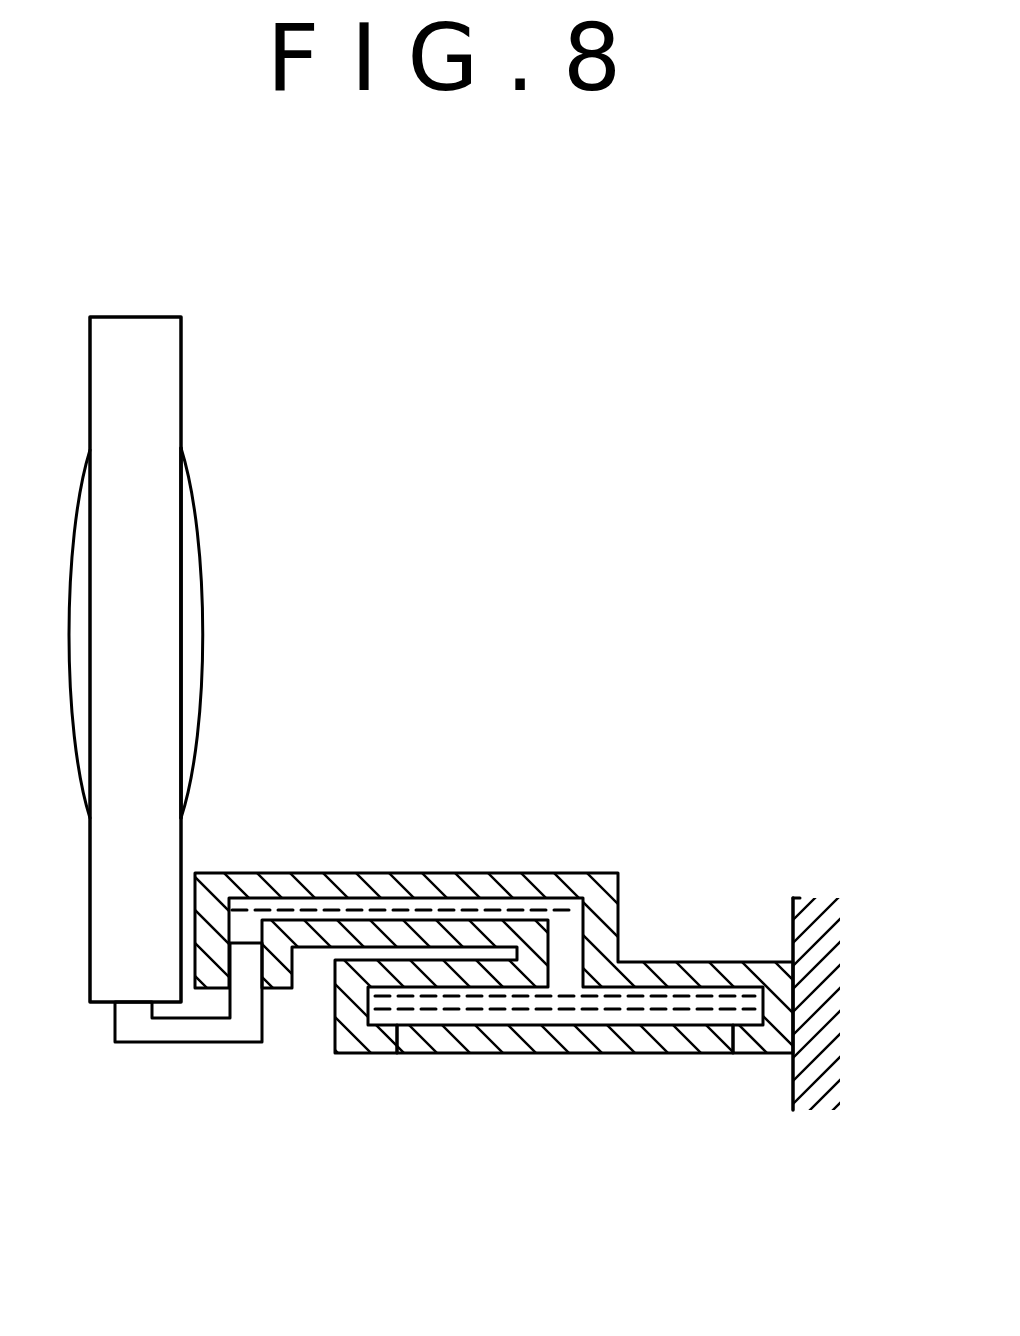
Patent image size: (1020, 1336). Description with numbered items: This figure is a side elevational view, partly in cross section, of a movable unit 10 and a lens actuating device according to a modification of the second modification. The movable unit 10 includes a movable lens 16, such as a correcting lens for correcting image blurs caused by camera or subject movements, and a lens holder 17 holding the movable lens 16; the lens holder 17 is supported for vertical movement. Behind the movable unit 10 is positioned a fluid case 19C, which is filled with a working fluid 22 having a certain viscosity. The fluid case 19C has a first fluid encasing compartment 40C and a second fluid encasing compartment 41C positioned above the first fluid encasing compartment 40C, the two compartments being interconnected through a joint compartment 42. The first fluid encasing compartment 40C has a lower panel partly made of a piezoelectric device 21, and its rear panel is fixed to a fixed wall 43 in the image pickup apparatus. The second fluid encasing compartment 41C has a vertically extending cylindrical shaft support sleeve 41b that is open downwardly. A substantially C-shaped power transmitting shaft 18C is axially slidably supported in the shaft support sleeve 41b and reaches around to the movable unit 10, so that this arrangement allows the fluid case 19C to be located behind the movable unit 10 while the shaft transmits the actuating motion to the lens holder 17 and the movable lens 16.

The movable unit 10 is at (177, 342).
The lens holder 17 is at (175, 447).
The movable lens 16 is at (202, 573).
The fluid case 19C is at (510, 887).
The second fluid encasing compartment 41C is at (368, 872).
The joint compartment 42 is at (607, 927).
The first fluid encasing compartment 40C is at (723, 962).
The shaft support sleeve 41b is at (295, 988).
The piezoelectric device 21 is at (593, 1047).
The working fluid 22 is at (448, 1005).
The fixed wall 43 is at (793, 1090).
The power transmitting shaft 18C is at (160, 1042).